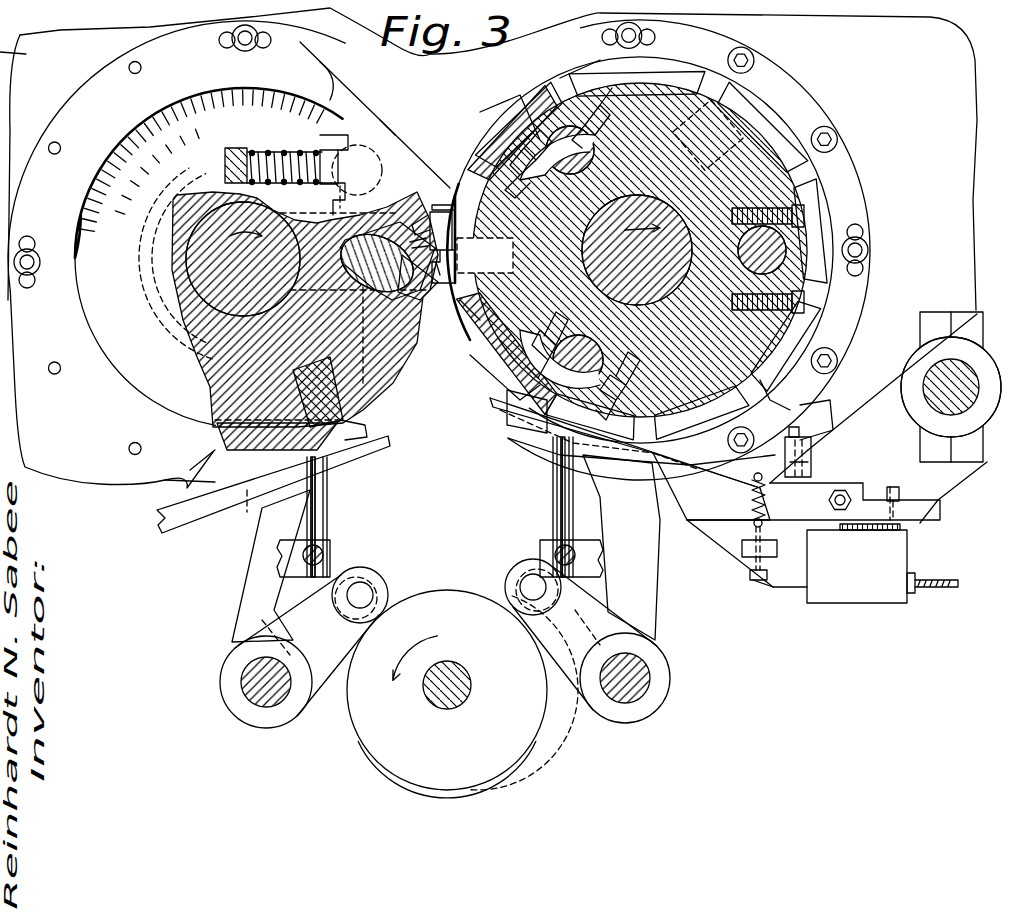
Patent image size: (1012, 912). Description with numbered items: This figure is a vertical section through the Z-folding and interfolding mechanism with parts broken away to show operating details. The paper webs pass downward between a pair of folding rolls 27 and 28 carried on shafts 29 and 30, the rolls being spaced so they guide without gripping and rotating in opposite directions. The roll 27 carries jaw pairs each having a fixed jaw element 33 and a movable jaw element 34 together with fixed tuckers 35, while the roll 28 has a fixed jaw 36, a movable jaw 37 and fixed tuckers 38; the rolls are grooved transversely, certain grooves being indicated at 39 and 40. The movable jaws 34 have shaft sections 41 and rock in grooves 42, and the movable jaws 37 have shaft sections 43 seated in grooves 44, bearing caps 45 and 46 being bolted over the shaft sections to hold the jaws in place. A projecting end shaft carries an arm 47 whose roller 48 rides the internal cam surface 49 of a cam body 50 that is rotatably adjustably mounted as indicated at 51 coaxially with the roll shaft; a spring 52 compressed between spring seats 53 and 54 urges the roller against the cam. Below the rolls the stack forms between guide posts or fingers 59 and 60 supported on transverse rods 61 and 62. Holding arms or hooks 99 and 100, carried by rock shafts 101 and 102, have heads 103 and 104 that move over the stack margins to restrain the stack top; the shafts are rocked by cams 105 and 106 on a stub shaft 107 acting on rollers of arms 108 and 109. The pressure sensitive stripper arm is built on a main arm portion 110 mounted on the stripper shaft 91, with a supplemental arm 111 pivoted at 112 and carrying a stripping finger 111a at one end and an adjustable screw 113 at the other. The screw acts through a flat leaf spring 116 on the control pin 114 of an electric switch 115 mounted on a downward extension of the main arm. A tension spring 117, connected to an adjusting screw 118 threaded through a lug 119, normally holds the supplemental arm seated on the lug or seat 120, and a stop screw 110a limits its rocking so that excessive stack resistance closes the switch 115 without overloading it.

The folding roll 27 is at (400, 388).
The folding roll 28 is at (820, 340).
The shaft 29 is at (246, 259).
The shaft 30 is at (634, 259).
The fixed jaw element 33 is at (438, 205).
The movable jaw element 34 is at (420, 300).
The tucker 35 is at (367, 432).
The fixed jaw 36 is at (515, 418).
The movable jaw 37 is at (540, 435).
The fixed tucker 38 is at (745, 118).
The groove 39 is at (251, 452).
The groove 40 is at (790, 392).
The shaft section 41 is at (383, 262).
The groove 42 is at (438, 312).
The shaft section 43 is at (592, 369).
The groove 44 is at (512, 381).
The bearing cap 45 is at (362, 338).
The bearing cap 46 is at (790, 200).
The arm 47 is at (333, 200).
The roller 48 is at (377, 116).
The internal cam surface 49 is at (337, 76).
The cam body 50 is at (72, 106).
The rotatable adjustable mounting 51 is at (156, 282).
The spring 52 is at (276, 150).
The spring seat 53 is at (240, 148).
The spring seat 54 is at (327, 150).
The guide post 59 is at (328, 529).
The guide post 60 is at (553, 520).
The transverse rod 61 is at (324, 553).
The transverse rod 62 is at (548, 552).
The shaft 91 is at (936, 366).
The holding arm 99 is at (262, 548).
The holding arm 100 is at (650, 580).
The shaft 101 is at (268, 707).
The shaft 102 is at (640, 695).
The head 103 is at (365, 452).
The head 104 is at (585, 482).
The cam 105 is at (375, 752).
The cam 106 is at (530, 735).
The stub shaft 107 is at (460, 700).
The arm 108 is at (332, 636).
The arm 109 is at (588, 635).
The main arm portion 110 is at (938, 489).
The stop screw 110a is at (818, 448).
The supplemental arm 111 is at (740, 506).
The stripping finger 111a is at (492, 400).
The pivot 112 is at (844, 488).
The adjustable screw 113 is at (902, 474).
The control pin 114 is at (895, 531).
The electric switch 115 is at (845, 598).
The flat leaf spring 116 is at (902, 535).
The tension spring 117 is at (768, 496).
The adjusting screw 118 is at (750, 570).
The lug 119 is at (740, 550).
The seat lug 120 is at (785, 540).